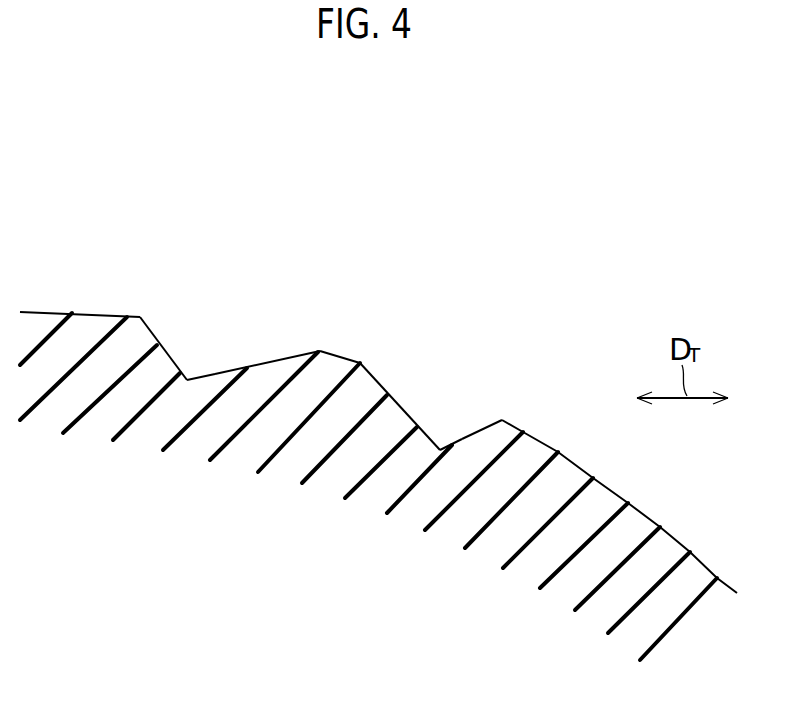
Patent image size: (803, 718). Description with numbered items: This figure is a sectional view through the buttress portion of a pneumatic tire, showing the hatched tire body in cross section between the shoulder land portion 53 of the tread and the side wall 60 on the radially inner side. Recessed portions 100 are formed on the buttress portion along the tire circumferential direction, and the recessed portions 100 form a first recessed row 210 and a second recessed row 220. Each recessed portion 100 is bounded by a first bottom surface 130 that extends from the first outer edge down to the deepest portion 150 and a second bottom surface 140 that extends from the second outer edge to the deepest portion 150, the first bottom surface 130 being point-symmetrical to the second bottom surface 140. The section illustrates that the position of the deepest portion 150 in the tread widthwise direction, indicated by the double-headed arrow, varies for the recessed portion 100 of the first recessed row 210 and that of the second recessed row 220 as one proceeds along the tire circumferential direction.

The recessed portion 100 is at (378, 420).
The first recessed row 210 is at (238, 265).
The second recessed row 220 is at (460, 333).
The shoulder land portion 53 is at (82, 310).
The first bottom surface 130 is at (157, 335).
The deepest portion 150 is at (193, 375).
The second bottom surface 140 is at (268, 363).
The side wall 60 is at (344, 356).